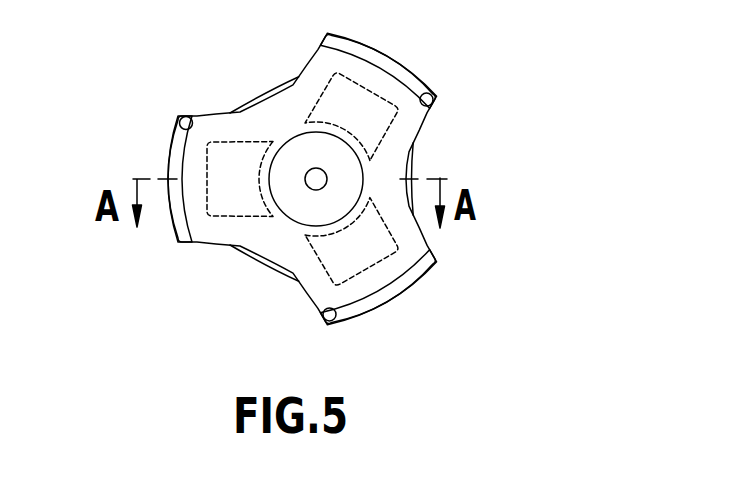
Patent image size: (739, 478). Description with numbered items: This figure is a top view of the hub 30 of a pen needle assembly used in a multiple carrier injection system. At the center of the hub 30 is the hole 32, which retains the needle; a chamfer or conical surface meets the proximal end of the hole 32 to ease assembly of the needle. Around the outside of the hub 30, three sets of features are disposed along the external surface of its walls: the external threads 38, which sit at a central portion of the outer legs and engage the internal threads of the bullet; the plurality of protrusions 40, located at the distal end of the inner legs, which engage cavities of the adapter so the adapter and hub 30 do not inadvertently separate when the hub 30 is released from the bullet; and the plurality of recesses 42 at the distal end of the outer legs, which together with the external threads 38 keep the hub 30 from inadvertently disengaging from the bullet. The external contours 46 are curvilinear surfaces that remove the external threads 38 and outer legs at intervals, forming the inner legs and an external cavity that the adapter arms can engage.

The hub 30 is at (322, 170).
The hole 32 is at (317, 183).
The external threads 38 is at (173, 142).
The plurality of protrusions 40 is at (262, 262).
The plurality of recesses 42 is at (372, 78).
The external contours 46 is at (240, 111).